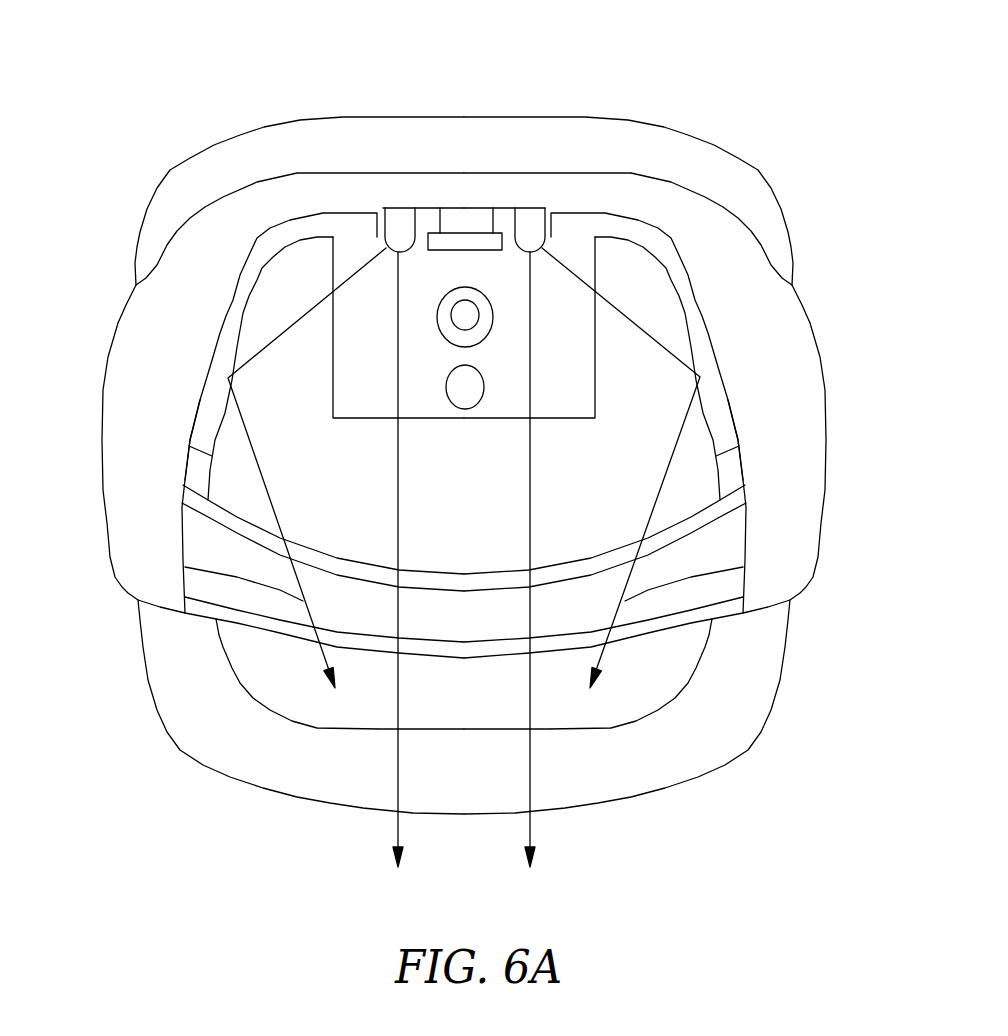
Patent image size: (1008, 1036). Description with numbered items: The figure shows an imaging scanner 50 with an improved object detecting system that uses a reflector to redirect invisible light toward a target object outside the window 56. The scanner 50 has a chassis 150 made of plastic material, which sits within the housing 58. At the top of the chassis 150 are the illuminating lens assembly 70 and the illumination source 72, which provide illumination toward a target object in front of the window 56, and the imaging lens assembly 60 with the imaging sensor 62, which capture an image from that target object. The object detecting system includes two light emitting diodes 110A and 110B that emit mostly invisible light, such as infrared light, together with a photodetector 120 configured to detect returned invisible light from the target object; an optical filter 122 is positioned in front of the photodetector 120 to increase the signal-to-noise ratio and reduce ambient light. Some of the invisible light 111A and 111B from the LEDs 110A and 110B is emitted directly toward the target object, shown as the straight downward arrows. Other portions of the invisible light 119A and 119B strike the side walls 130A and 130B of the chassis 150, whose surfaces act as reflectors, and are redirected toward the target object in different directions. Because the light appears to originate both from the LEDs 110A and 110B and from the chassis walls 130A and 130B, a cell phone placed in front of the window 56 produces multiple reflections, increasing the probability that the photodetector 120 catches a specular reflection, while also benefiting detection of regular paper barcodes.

The imaging scanner 50 is at (470, 445).
The window 56 is at (240, 540).
The housing 58 is at (117, 322).
The imaging lens assembly 60 is at (609, 216).
The imaging sensor 62 is at (495, 313).
The illuminating lens assembly 70 is at (661, 297).
The illumination source 72 is at (487, 387).
The light emitting diode 110A is at (405, 223).
The light emitting diode 110B is at (533, 232).
The invisible light 111A is at (398, 828).
The invisible light 111B is at (530, 828).
The invisible light 119A is at (185, 567).
The invisible light 119B is at (743, 566).
The photodetector 120 is at (460, 136).
The optical filter 122 is at (458, 223).
The side wall 130A is at (222, 402).
The side wall 130B is at (708, 402).
The chassis 150 is at (648, 237).